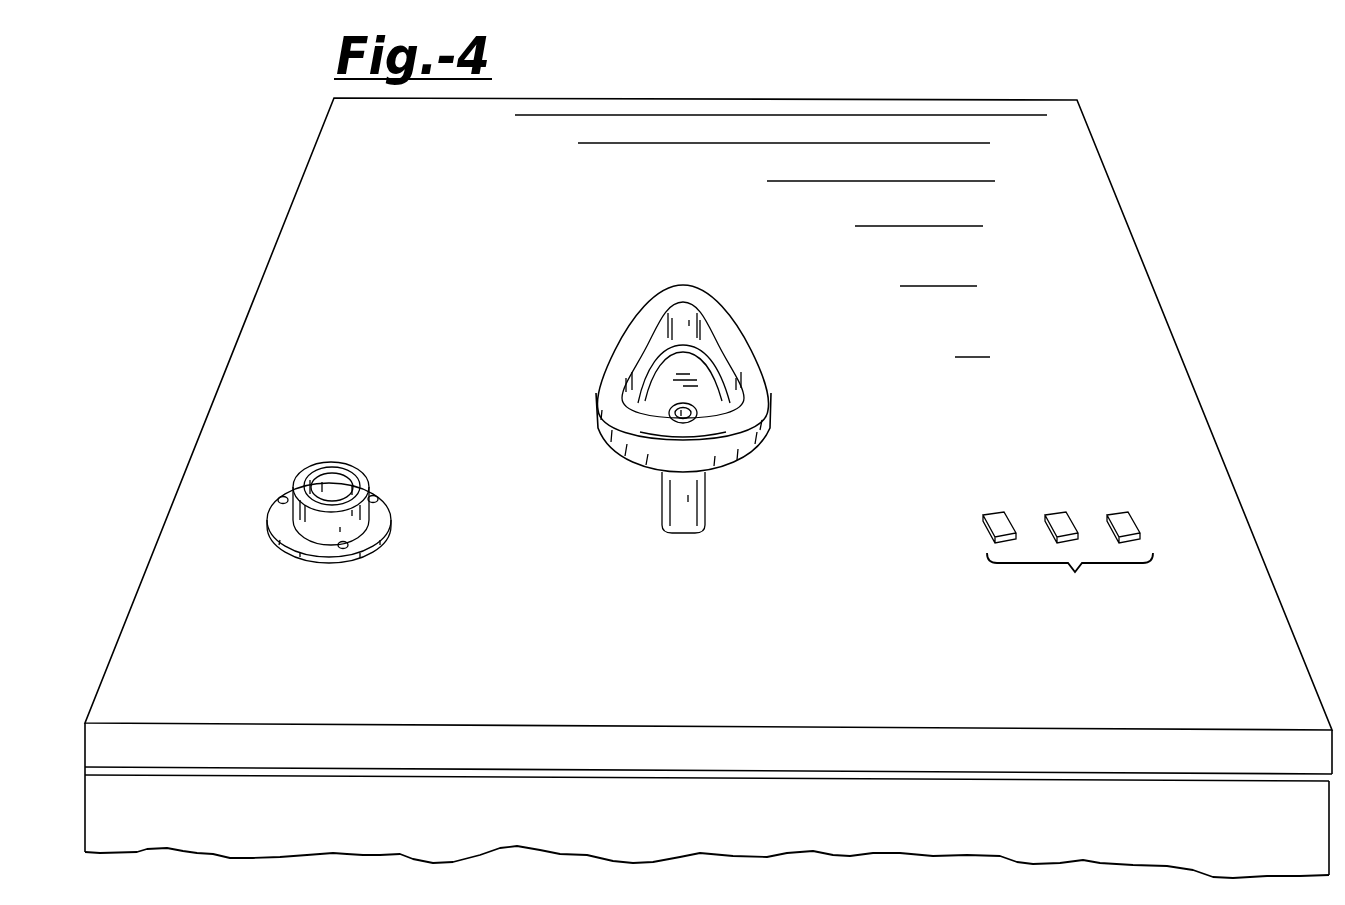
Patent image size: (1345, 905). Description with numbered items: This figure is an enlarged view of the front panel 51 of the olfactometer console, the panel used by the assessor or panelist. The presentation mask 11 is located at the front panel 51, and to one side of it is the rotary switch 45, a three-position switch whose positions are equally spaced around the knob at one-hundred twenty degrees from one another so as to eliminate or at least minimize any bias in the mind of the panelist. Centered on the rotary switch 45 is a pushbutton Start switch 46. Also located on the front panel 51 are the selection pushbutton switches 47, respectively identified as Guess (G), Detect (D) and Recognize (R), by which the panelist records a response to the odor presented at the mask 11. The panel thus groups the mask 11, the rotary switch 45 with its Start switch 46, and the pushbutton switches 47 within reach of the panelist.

The presentation mask 11 is at (712, 292).
The rotary switch 45 is at (360, 479).
The pushbutton "Start" switch 46 is at (330, 480).
The pushbutton switches 47 is at (1075, 577).
The front panel 51 is at (1115, 233).